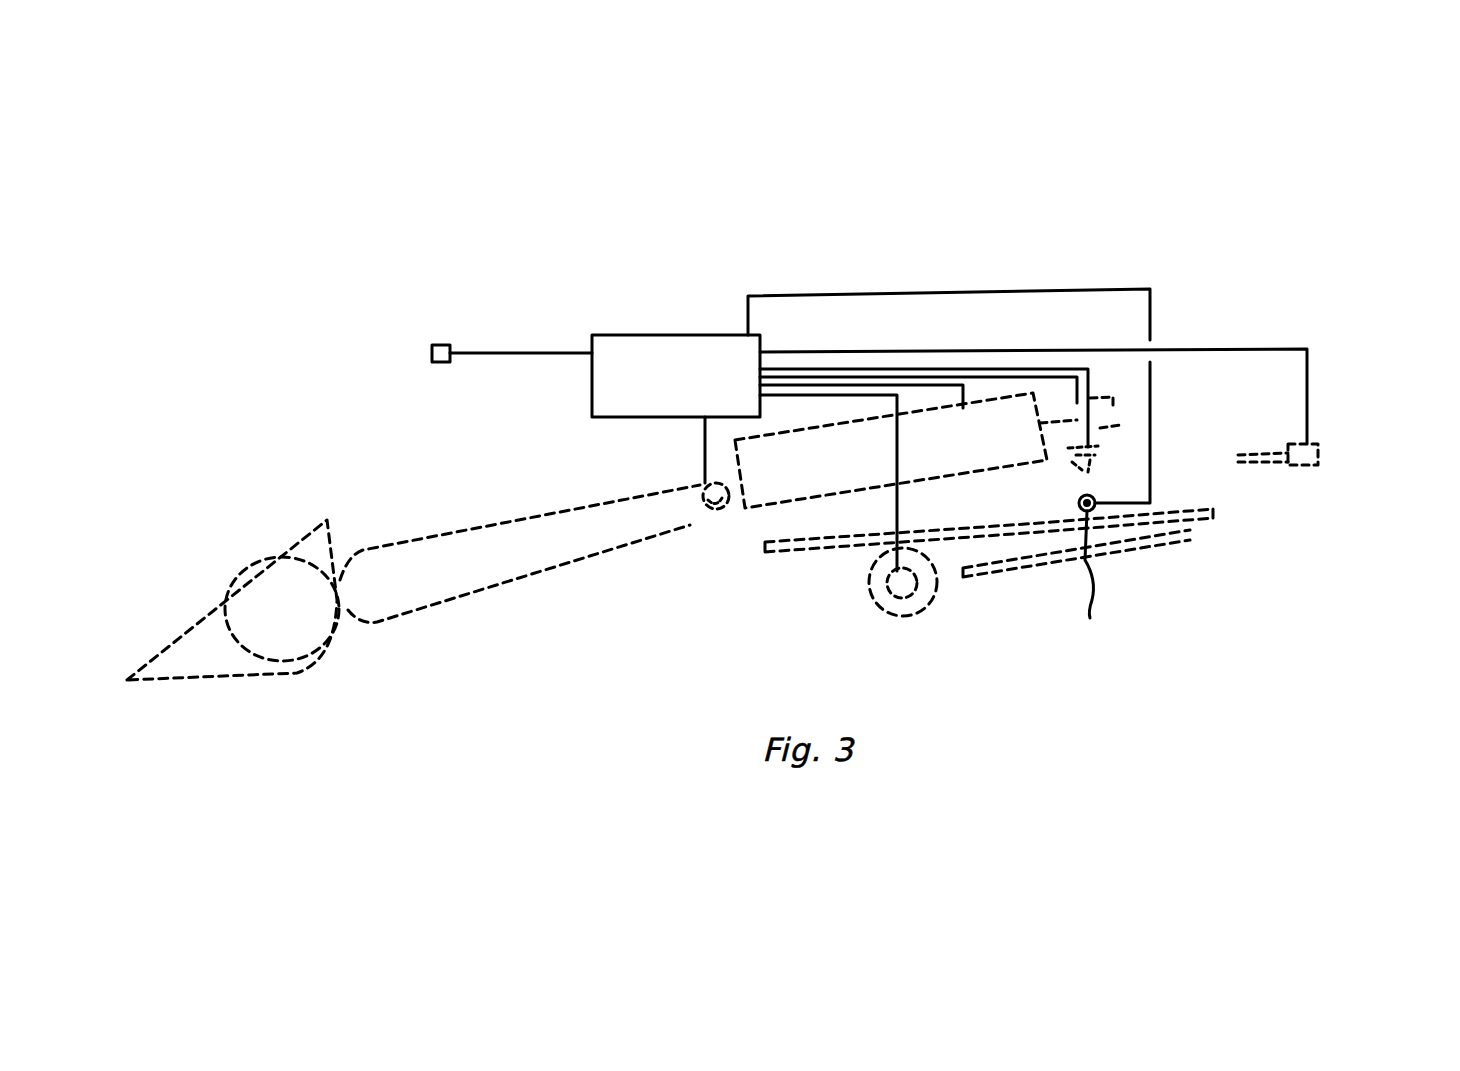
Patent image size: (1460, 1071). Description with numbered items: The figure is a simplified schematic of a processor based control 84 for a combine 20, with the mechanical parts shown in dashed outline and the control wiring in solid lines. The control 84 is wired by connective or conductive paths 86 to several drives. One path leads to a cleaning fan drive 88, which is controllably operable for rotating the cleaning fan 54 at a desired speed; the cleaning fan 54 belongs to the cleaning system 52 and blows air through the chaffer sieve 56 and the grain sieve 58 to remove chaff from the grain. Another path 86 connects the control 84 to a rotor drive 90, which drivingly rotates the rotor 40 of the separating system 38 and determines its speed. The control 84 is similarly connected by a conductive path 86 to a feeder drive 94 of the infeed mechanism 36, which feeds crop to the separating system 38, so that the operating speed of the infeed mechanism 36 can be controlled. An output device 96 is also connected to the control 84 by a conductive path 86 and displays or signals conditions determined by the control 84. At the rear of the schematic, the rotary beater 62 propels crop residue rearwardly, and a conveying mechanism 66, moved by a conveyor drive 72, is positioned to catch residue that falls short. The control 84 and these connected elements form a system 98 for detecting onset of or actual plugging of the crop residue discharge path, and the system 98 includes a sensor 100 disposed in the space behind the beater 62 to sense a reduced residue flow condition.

The combine 20 is at (1288, 190).
The infeed mechanism 36 is at (506, 582).
The separating system 38 is at (818, 515).
The rotor 40 is at (747, 508).
The cleaning system 52 is at (1208, 543).
The cleaning fan 54 is at (882, 603).
The chaffer sieve 56 is at (1213, 511).
The grain sieve 58 is at (1137, 550).
The rotary beater 62 is at (1072, 470).
The conveying mechanism 66 is at (1260, 462).
The conveyor drive 72 is at (1317, 443).
The processor based control 84 is at (620, 335).
The conductive path 86 is at (478, 353).
The cleaning fan drive 88 is at (913, 593).
The rotor drive 90 is at (1117, 427).
The feeder drive 94 is at (700, 516).
The output device 96 is at (445, 343).
The system for detecting a plugging condition 98 is at (1181, 306).
The sensor 100 is at (1099, 574).